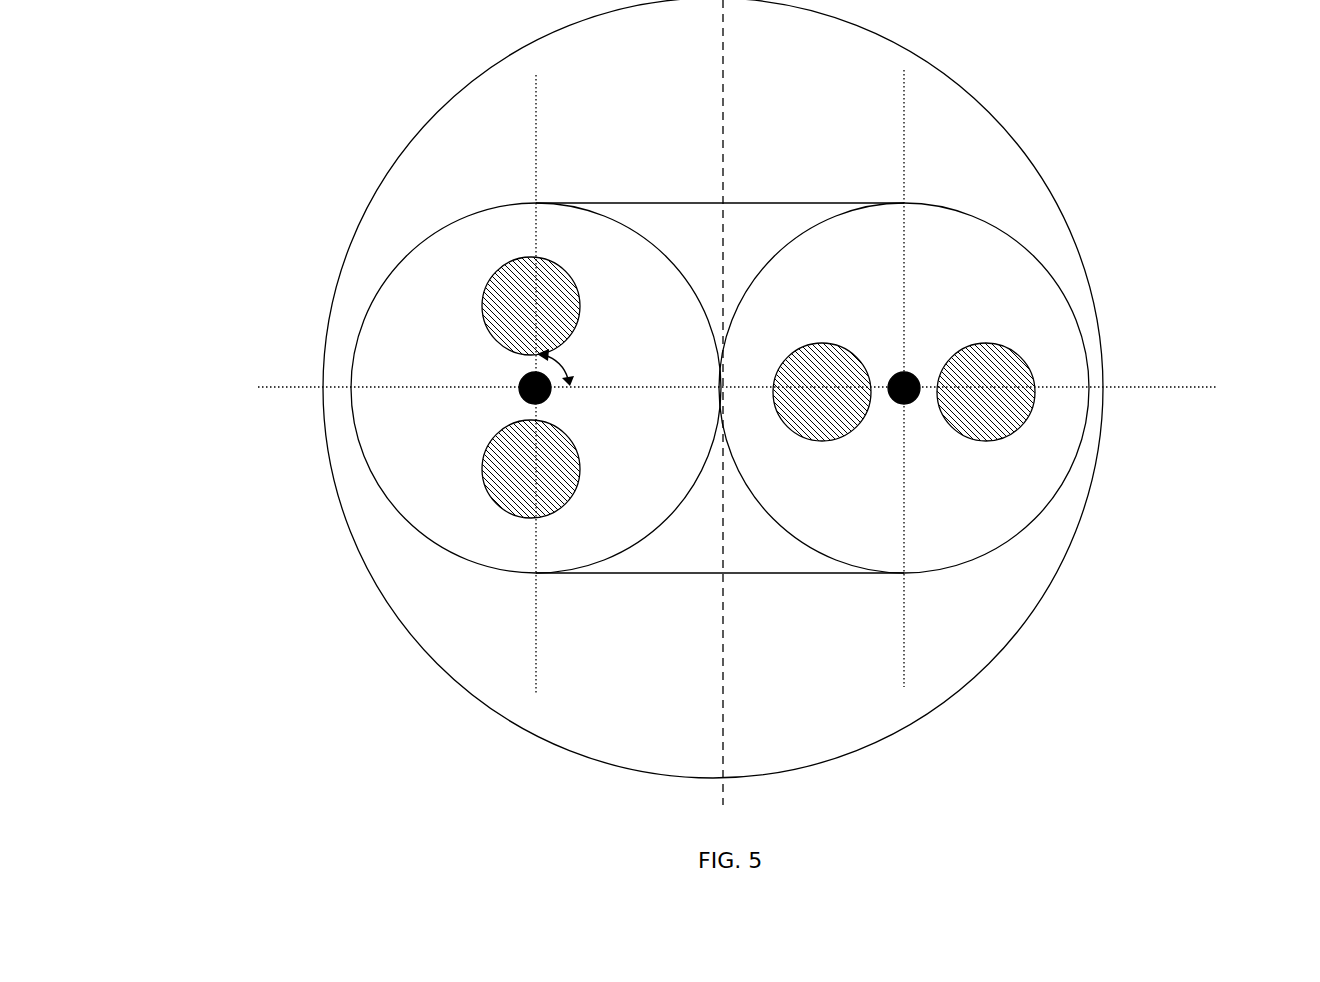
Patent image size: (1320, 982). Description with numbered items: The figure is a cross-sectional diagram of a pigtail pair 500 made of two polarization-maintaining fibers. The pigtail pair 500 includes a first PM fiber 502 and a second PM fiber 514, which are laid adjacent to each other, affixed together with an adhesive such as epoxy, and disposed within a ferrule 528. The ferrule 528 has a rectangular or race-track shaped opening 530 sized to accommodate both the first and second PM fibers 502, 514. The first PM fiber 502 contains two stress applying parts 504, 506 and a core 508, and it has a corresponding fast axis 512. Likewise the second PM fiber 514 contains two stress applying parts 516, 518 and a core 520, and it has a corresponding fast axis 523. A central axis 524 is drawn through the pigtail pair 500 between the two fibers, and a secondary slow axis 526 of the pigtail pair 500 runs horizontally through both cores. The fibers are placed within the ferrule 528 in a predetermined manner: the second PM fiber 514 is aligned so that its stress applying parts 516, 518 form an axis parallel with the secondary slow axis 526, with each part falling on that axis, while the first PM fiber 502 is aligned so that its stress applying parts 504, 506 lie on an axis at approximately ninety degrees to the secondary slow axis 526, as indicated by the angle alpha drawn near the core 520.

The pigtail pair 500 is at (321, 103).
The first PM fiber 502 is at (868, 200).
The stress applying part 504 is at (998, 330).
The stress applying part 506 is at (828, 463).
The core 508 is at (913, 402).
The fast axis 512 is at (912, 680).
The second PM fiber 514 is at (517, 197).
The stress applying part 516 is at (585, 300).
The stress applying part 518 is at (547, 518).
The core 520 is at (513, 382).
The fast axis 523 is at (550, 677).
The central vertical axis 524 is at (705, 45).
The secondary slow axis 526 is at (1202, 375).
The ferrule 528 is at (330, 262).
The opening 530 is at (677, 197).